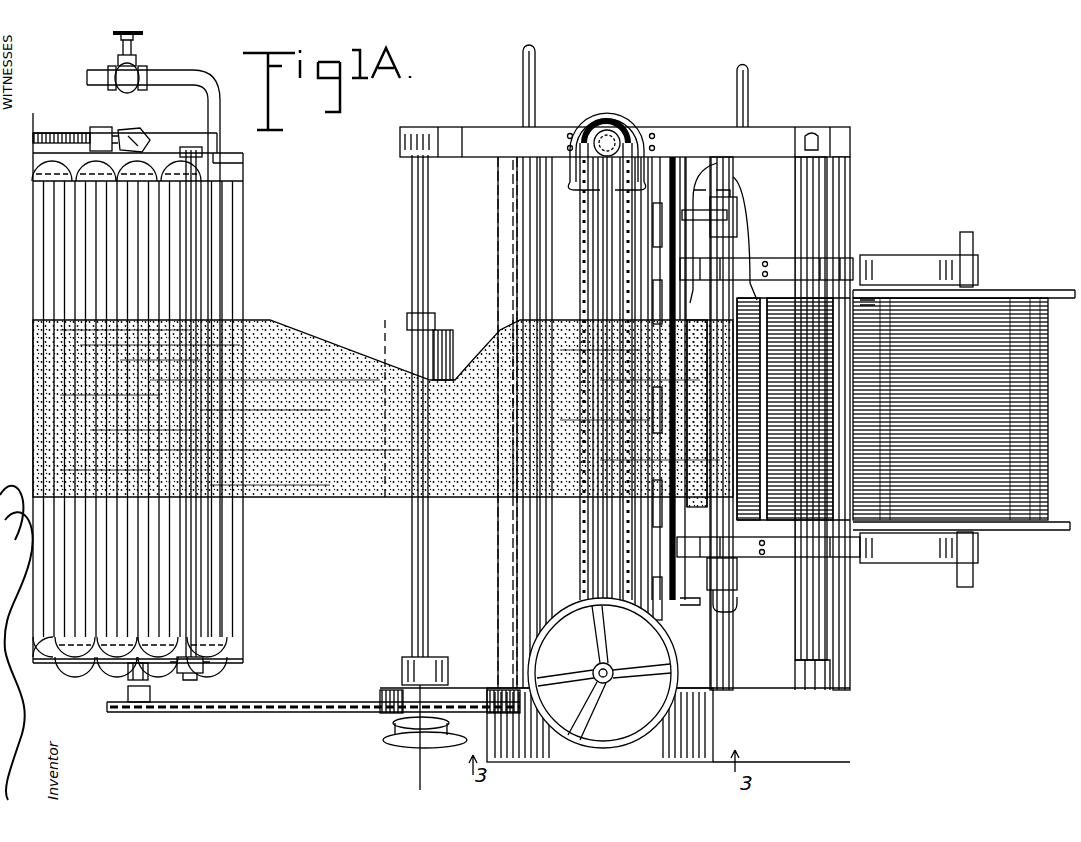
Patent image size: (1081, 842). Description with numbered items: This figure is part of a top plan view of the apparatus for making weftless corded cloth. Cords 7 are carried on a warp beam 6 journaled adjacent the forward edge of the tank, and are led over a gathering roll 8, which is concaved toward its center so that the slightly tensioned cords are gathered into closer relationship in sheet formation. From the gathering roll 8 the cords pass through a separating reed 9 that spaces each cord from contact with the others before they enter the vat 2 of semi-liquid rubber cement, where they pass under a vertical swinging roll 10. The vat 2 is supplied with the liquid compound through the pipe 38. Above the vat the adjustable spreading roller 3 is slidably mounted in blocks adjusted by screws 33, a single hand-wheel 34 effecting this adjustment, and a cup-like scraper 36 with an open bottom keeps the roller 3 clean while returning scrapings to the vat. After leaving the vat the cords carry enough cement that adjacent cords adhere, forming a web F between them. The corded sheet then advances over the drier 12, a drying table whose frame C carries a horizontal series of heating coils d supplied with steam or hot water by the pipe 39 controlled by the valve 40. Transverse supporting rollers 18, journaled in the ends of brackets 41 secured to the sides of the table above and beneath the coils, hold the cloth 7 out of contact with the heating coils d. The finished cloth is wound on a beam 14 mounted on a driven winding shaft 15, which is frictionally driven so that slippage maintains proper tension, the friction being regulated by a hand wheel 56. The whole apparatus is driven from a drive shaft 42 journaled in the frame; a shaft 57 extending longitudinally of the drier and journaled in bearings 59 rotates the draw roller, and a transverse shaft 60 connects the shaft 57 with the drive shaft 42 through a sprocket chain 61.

The vat 2 is at (762, 246).
The spreading roller 3 is at (600, 522).
The warp beam 6 is at (420, 638).
The cords 7 is at (258, 345).
The gathering roll 8 is at (805, 215).
The separating reed 9 is at (700, 165).
The vertical swinging roll 10 is at (717, 497).
The drier 12 is at (236, 246).
The winding beam 14 is at (446, 340).
The winding shaft 15 is at (430, 548).
The transverse supporting rollers 18 is at (196, 618).
The screws 33 is at (612, 140).
The hand-wheel 34 is at (665, 700).
The cup-like scraper 36 is at (650, 270).
The pipe 38 is at (748, 86).
The pipe 39 is at (208, 124).
The valve 40 is at (128, 74).
The brackets 41 is at (208, 660).
The drive shaft 42 is at (532, 98).
The hand wheel 56 is at (392, 744).
The shaft 57 is at (66, 118).
The bearings 59 is at (104, 130).
The transverse shaft 60 is at (150, 684).
The sprocket chain 61 is at (300, 702).
The frame C is at (236, 190).
The heating coils d is at (42, 256).
The web F is at (702, 554).